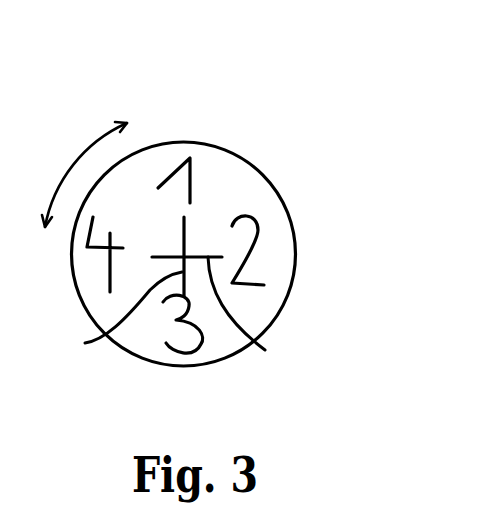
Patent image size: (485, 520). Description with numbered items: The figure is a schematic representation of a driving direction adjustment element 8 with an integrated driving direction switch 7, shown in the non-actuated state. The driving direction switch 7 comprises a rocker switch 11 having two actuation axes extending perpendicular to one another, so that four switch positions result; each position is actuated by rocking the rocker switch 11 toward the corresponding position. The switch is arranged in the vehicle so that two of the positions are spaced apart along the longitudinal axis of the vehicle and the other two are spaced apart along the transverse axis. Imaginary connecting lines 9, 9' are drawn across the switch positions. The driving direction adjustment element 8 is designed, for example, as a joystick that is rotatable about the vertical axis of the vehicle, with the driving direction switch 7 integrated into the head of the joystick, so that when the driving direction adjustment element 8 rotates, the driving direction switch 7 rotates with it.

The driving direction switch 7 is at (213, 142).
The driving direction adjustment element 8 is at (184, 192).
The rocker switch 11 is at (221, 192).
The imaginary connecting line 9 is at (251, 318).
The imaginary connecting line 9' is at (109, 322).